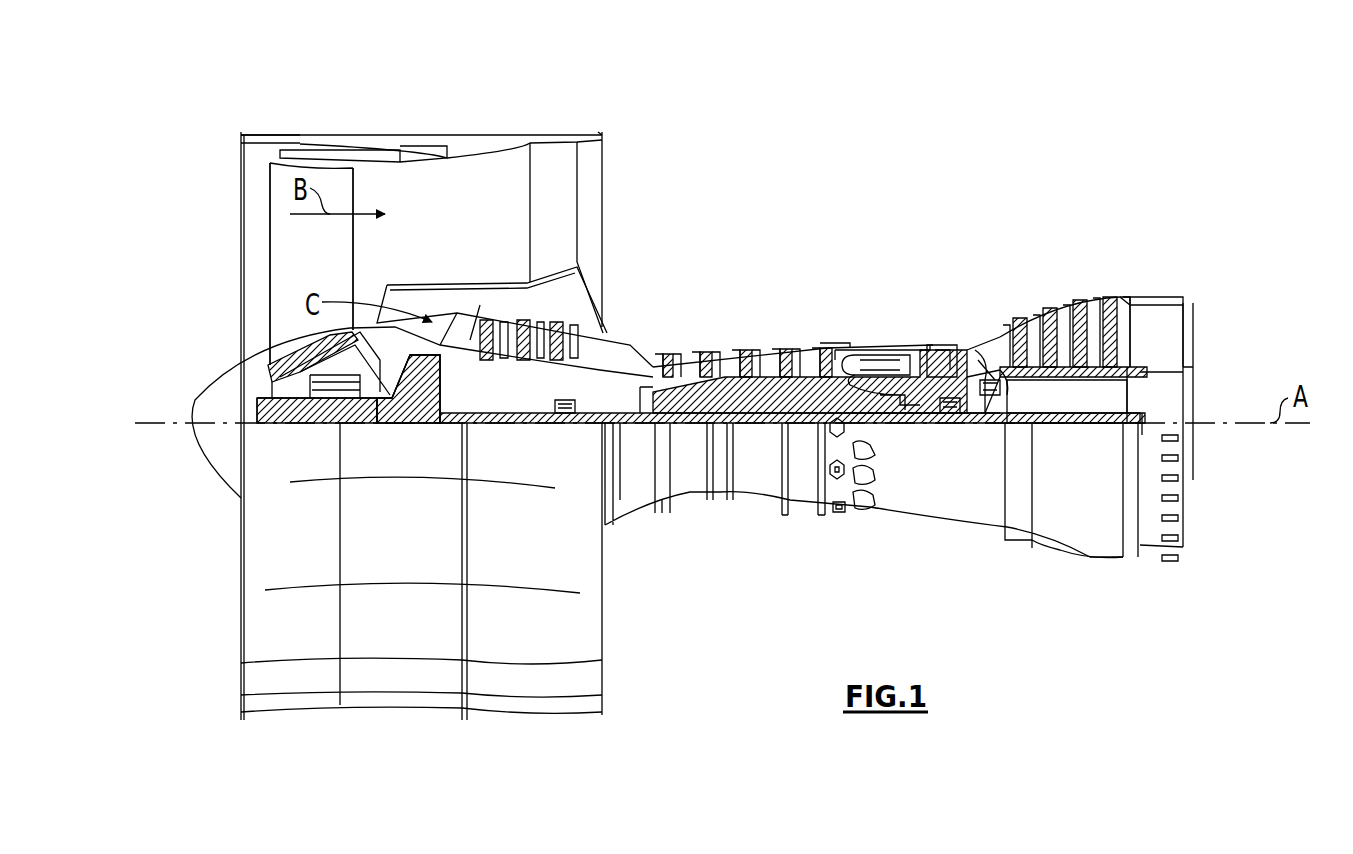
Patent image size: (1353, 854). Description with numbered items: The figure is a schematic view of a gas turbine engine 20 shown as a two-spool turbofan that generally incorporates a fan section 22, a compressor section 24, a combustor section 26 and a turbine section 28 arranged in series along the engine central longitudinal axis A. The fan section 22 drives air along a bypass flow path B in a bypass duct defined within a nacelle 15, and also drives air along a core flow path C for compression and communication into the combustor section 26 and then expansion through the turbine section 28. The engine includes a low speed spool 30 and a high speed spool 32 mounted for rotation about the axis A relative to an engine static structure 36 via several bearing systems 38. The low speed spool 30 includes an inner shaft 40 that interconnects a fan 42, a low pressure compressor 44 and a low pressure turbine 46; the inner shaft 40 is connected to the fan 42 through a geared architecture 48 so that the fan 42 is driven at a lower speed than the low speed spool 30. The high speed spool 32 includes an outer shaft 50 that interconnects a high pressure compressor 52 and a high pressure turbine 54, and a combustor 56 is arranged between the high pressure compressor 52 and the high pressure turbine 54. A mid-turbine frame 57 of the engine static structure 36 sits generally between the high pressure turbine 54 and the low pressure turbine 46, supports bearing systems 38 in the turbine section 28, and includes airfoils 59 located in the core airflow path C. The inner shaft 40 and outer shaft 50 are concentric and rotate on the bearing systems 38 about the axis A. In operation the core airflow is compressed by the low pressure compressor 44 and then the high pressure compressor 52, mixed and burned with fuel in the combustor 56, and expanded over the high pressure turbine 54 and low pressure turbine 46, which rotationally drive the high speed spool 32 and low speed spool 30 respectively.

The nacelle 15 is at (424, 142).
The gas turbine engine 20 is at (882, 188).
The fan section 22 is at (352, 130).
The compressor section 24 is at (652, 330).
The combustor section 26 is at (878, 315).
The turbine section 28 is at (1022, 283).
The low speed spool 30 is at (760, 426).
The high speed spool 32 is at (805, 365).
The engine static structure 36 is at (800, 515).
The bearing systems 38 is at (565, 424).
The inner shaft 40 is at (620, 430).
The fan 42 is at (324, 268).
The low pressure compressor 44 is at (545, 330).
The low pressure turbine 46 is at (1070, 310).
The geared architecture 48 is at (430, 424).
The outer shaft 50 is at (893, 420).
The high pressure compressor 52 is at (735, 370).
The high pressure turbine 54 is at (940, 345).
The combustor 56 is at (878, 365).
The mid-turbine frame 57 is at (985, 338).
The airfoils 59 is at (1015, 400).